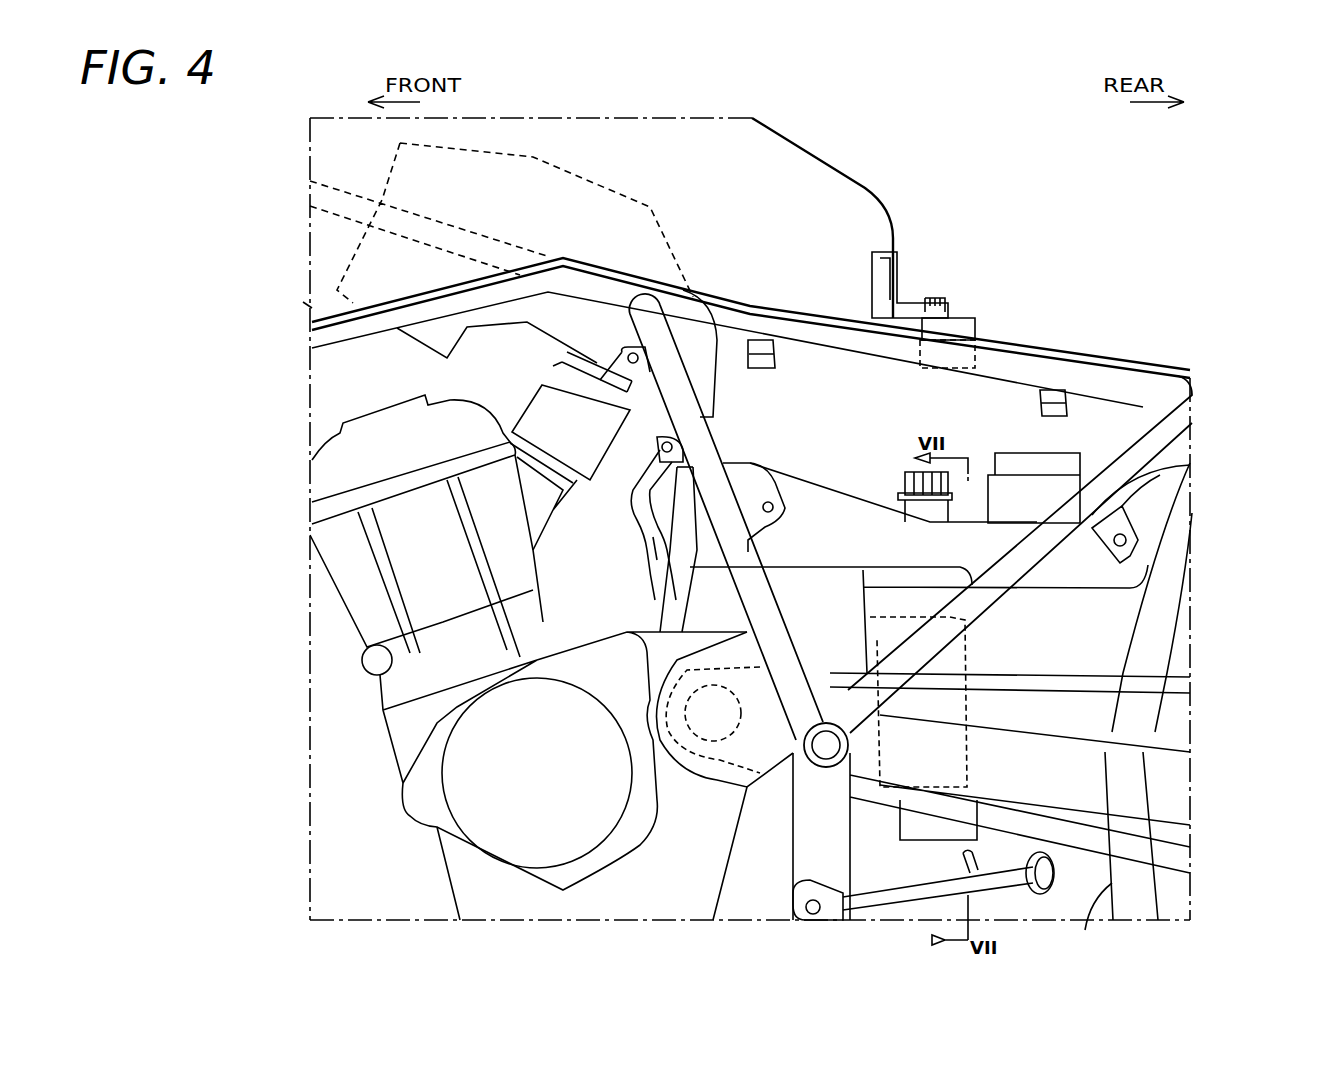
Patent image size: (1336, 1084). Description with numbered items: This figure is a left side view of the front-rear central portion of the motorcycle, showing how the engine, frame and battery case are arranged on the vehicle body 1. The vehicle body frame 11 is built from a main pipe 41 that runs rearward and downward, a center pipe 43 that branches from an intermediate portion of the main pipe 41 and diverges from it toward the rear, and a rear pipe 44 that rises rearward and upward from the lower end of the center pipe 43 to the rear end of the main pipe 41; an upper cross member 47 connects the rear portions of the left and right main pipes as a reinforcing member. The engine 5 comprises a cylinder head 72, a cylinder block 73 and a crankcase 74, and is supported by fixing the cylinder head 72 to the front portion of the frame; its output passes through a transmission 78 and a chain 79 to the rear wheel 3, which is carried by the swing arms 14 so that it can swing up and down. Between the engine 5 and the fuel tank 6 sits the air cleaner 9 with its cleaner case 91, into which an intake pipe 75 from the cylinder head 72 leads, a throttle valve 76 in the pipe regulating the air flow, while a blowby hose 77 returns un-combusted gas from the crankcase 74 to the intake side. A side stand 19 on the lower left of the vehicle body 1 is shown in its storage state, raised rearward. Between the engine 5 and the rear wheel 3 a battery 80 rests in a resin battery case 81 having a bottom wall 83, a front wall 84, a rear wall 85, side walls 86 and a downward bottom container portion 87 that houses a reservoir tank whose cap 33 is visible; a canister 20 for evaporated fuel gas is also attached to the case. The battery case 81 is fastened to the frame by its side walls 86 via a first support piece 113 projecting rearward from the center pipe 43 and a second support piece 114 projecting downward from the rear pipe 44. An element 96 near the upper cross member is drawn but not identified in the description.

The vehicle body 1 is at (1082, 310).
The rear wheel 3 is at (1110, 882).
The engine 5 is at (316, 624).
The fuel tank 6 is at (832, 190).
The air cleaner 9 is at (382, 158).
The vehicle body frame 11 is at (286, 302).
The swing arms 14 is at (1185, 778).
The side stand 19 is at (908, 898).
The canister 20 is at (868, 642).
The cap 33 is at (900, 478).
The main pipe 41 is at (604, 292).
The center pipe 43 is at (677, 367).
The rear pipe 44 is at (1135, 453).
The upper cross member 47 is at (960, 318).
The cylinder head 72 is at (347, 560).
The cylinder block 73 is at (447, 668).
The crankcase 74 is at (467, 737).
The intake pipe 75 is at (547, 510).
The throttle valve 76 is at (553, 395).
The blowby hose 77 is at (653, 537).
The transmission 78 is at (665, 885).
The chain 79 is at (1173, 860).
The battery 80 is at (1015, 485).
The battery case 81 is at (673, 583).
The bottom wall 83 is at (707, 577).
The front wall 84 is at (645, 512).
The rear wall 85 is at (1180, 532).
The side walls 86 is at (828, 515).
The bottom container portion 87 is at (990, 653).
The cleaner case 91 is at (420, 350).
The bracket 96 is at (905, 300).
The first support piece 113 is at (752, 508).
The second support piece 114 is at (1125, 558).